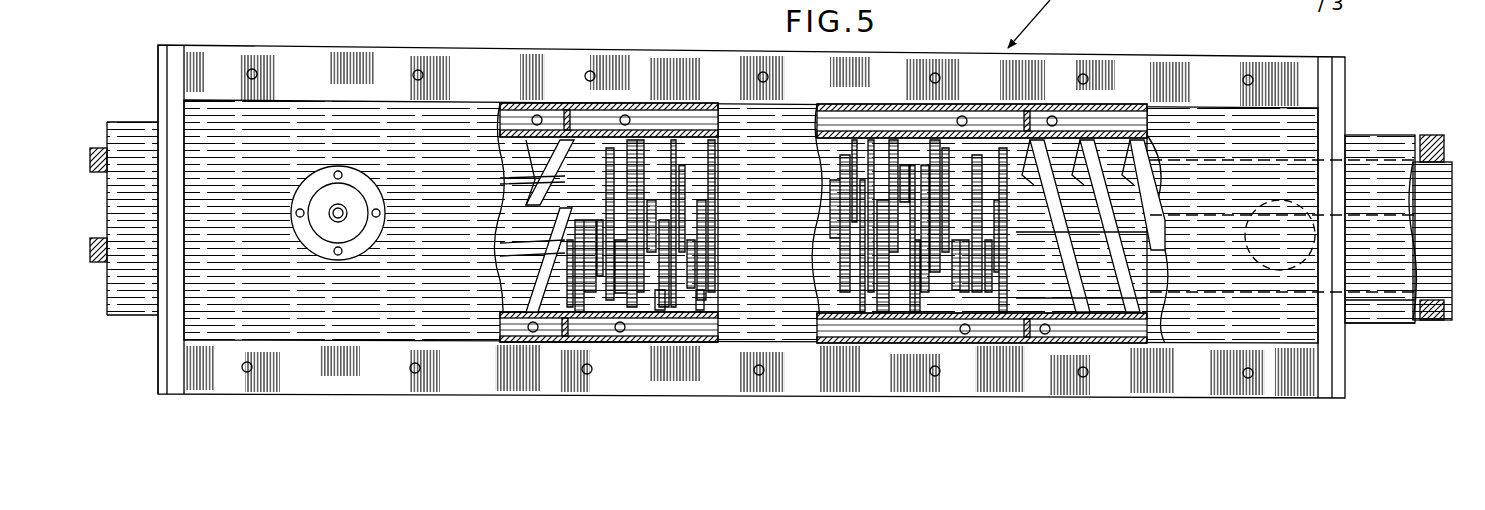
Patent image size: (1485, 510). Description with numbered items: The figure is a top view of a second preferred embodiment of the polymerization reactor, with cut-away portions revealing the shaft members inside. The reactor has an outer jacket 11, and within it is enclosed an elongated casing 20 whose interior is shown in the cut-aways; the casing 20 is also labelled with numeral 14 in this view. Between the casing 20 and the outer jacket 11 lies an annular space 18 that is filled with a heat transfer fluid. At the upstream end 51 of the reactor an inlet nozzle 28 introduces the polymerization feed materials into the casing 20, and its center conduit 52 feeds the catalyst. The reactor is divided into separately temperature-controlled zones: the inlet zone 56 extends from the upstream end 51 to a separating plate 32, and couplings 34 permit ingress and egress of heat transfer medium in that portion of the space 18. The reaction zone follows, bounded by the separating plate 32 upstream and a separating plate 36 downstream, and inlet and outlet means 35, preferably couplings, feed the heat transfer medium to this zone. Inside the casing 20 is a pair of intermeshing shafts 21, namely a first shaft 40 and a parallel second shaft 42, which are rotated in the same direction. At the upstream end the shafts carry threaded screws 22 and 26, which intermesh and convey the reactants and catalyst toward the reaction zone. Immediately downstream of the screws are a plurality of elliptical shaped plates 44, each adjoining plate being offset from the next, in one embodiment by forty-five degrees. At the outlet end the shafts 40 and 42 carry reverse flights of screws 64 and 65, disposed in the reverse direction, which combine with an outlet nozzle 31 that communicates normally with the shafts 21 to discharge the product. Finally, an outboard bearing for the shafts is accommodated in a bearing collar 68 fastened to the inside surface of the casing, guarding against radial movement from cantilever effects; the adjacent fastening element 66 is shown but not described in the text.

The outer jacket 11 is at (650, 100).
The tubular housing 14 is at (238, 219).
The annular space 18 is at (560, 104).
The elongated casing 20 is at (640, 345).
The intermeshing shafts 21 is at (892, 258).
The threaded screw 22 is at (505, 186).
The threaded screw 26 is at (540, 262).
The inlet nozzle 28 is at (382, 186).
The outlet nozzle 31 is at (1278, 262).
The separating plate 32 is at (548, 342).
The couplings 34 is at (530, 118).
The inlet and outlet means 35 is at (963, 117).
The separating plate 36 is at (1030, 345).
The first shaft 40 is at (1368, 158).
The second shaft 42 is at (1392, 300).
The elliptical shaped plates 44 is at (700, 295).
The upstream end 51 is at (164, 92).
The center conduit 52 is at (330, 222).
The inlet zone 56 is at (512, 322).
The reverse flight of screws 64 is at (1160, 182).
The reverse flight of screws 65 is at (1160, 272).
The nut 66 is at (1440, 322).
The bearing collar 68 is at (1432, 140).